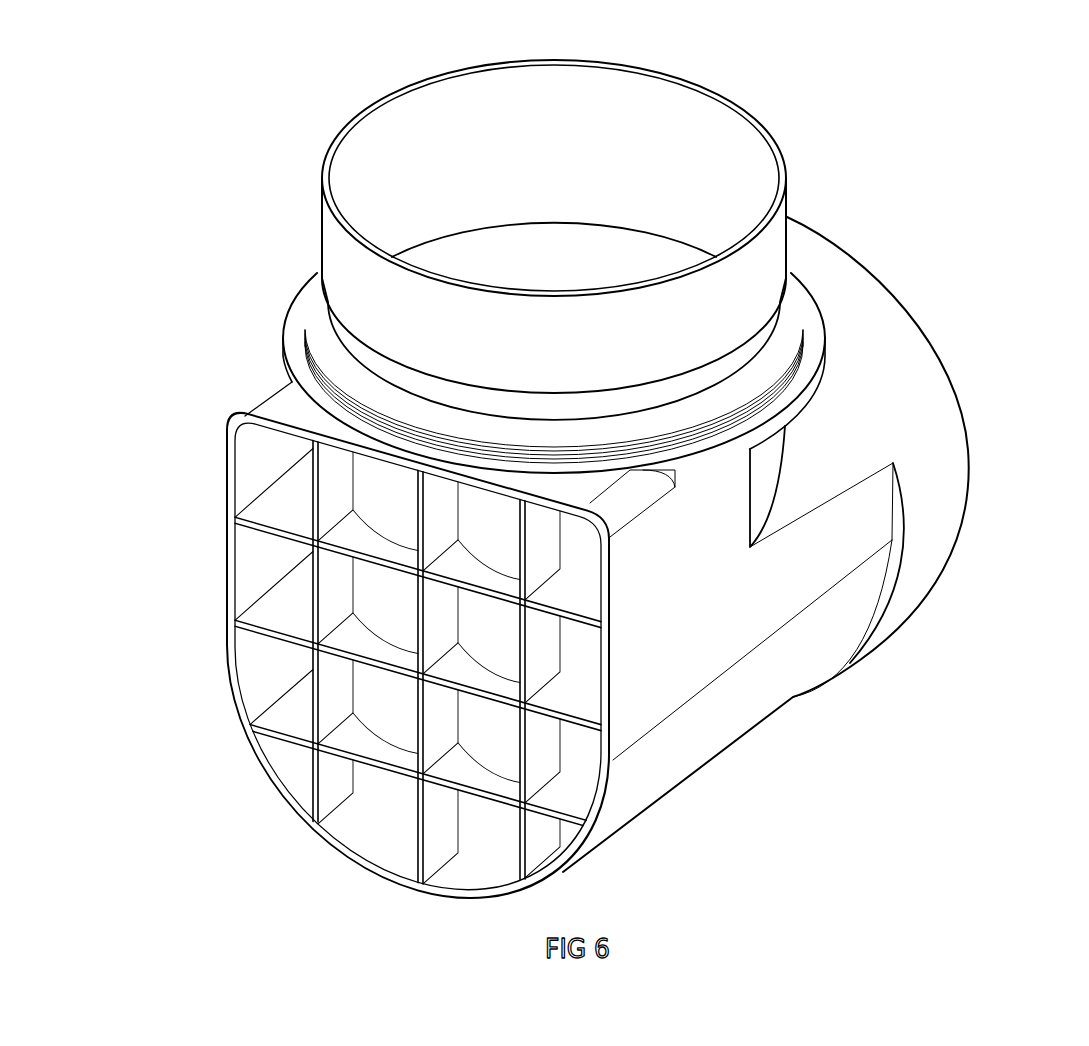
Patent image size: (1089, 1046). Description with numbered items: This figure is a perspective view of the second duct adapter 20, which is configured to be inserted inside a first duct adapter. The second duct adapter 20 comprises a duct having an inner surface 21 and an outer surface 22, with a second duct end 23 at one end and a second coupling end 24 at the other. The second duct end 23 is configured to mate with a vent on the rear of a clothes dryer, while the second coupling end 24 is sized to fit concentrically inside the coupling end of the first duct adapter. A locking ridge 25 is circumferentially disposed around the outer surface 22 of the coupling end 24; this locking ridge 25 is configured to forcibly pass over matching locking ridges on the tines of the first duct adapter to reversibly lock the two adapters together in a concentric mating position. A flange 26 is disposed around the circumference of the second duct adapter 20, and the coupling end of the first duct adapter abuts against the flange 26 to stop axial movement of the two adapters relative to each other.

The second duct adapter 20 is at (602, 492).
The inner surface 21 is at (753, 182).
The outer surface 22 is at (765, 260).
The second duct end 23 is at (943, 363).
The second coupling end 24 is at (740, 102).
The locking ridge 25 is at (307, 267).
The flange 26 is at (298, 360).